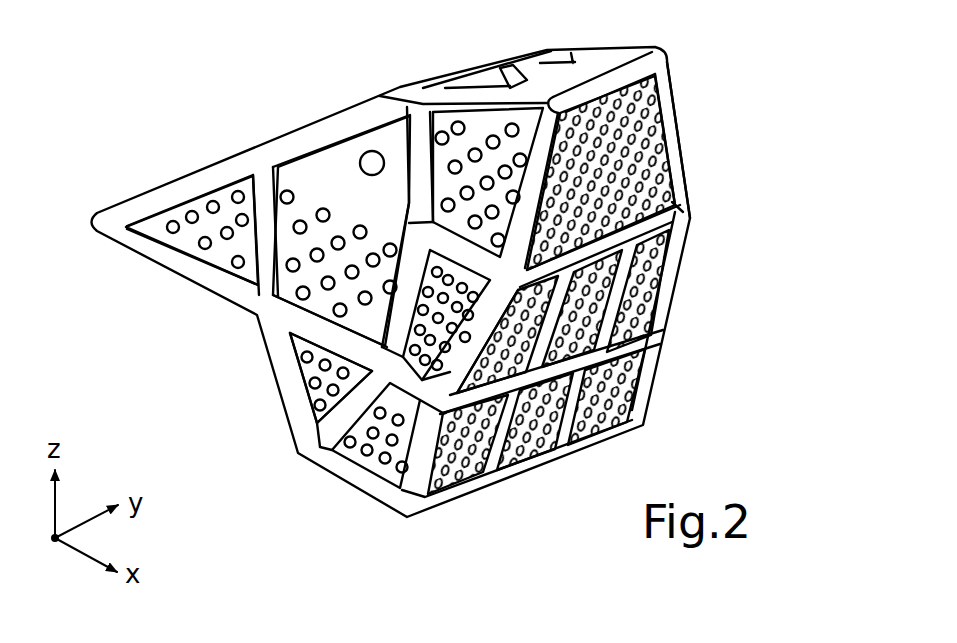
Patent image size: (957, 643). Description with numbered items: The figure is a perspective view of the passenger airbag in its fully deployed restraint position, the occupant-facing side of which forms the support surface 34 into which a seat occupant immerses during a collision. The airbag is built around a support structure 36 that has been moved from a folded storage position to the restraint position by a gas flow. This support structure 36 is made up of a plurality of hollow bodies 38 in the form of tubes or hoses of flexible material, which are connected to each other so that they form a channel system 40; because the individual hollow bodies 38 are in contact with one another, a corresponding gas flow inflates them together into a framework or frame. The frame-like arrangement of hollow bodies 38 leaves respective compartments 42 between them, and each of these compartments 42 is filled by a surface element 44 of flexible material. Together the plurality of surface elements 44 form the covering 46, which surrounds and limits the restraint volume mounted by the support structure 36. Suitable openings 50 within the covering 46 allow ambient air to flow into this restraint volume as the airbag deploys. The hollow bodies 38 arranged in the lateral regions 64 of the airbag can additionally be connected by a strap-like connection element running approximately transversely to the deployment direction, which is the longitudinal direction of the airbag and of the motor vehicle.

The support surface 34 is at (700, 285).
The support structure 36 is at (703, 122).
The hollow bodies 38 is at (210, 175).
The channel system 40 is at (447, 65).
The compartments 42 is at (313, 308).
The surface elements 44 is at (290, 238).
The covering 46 is at (197, 230).
The openings 50 is at (372, 163).
The lateral regions 64 is at (360, 351).